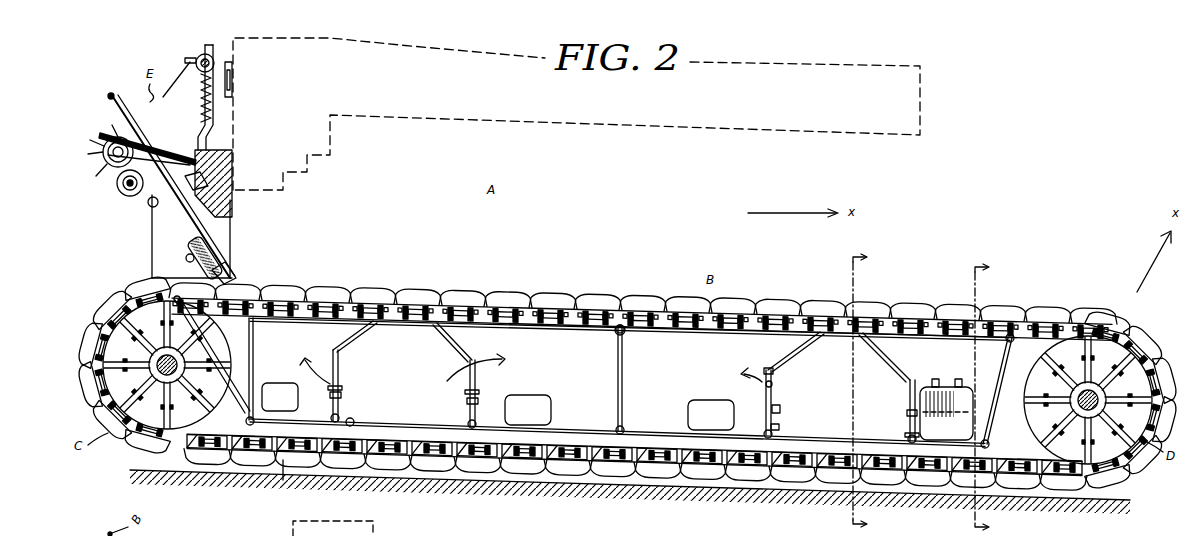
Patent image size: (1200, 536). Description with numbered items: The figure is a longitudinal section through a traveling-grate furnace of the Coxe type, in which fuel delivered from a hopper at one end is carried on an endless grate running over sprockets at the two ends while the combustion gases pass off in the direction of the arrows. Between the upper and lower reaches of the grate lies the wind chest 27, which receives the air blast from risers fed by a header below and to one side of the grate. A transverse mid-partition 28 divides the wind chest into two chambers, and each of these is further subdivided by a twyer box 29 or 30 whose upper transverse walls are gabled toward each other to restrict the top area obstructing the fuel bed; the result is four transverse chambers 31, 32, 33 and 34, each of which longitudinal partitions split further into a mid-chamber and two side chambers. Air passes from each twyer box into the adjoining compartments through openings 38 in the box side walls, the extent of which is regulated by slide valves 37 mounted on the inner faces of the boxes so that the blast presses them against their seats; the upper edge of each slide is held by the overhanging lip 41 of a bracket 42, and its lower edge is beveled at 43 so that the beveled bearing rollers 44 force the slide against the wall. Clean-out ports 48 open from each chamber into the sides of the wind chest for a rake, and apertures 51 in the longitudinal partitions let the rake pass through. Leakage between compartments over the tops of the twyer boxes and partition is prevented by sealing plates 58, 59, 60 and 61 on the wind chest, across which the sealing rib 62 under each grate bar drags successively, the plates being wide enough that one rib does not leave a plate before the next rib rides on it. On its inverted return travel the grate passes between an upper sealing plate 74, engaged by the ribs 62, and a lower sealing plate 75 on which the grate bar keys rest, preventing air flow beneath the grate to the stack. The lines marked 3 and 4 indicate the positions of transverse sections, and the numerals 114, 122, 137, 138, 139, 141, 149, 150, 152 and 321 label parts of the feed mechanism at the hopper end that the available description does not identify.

The section line 3- 3 is at (864, 391).
The section line 4- 4 is at (986, 398).
The wind chest 27 is at (1004, 442).
The transverse mid-partition 28 is at (617, 384).
The twyer box 29 is at (458, 347).
The twyer box 30 is at (800, 343).
The transverse chamber 31 is at (305, 363).
The transverse chamber 32 is at (498, 367).
The transverse chamber 33 is at (720, 371).
The transverse chamber 34 is at (950, 398).
The slide valve 37 is at (343, 387).
The opening 38 is at (332, 398).
The overhanging lip 41 is at (775, 386).
The bracket 42 is at (776, 380).
The beveled lower edge 43 is at (781, 409).
The beveled bearing roller 44 is at (780, 428).
The clean-out port 48 is at (498, 406).
The aperture 51 is at (218, 311).
The sealing plate 58 is at (380, 322).
The sealing plate 59 is at (613, 328).
The sealing plate 60 is at (852, 362).
The sealing plate 61 is at (1014, 348).
The sealing rib 62 is at (293, 306).
The upper sealing plate 74 is at (358, 421).
The lower sealing plate 75 is at (272, 483).
The lever arm 114 is at (190, 157).
The guide block 122 is at (216, 144).
The strut 137 is at (184, 215).
The roller 138 is at (210, 270).
The pivot 139 is at (152, 206).
The handwheel 141 is at (128, 188).
The roller 149 is at (220, 252).
The pin 150 is at (186, 258).
The spring post 152 is at (199, 103).
The link 321 is at (205, 190).